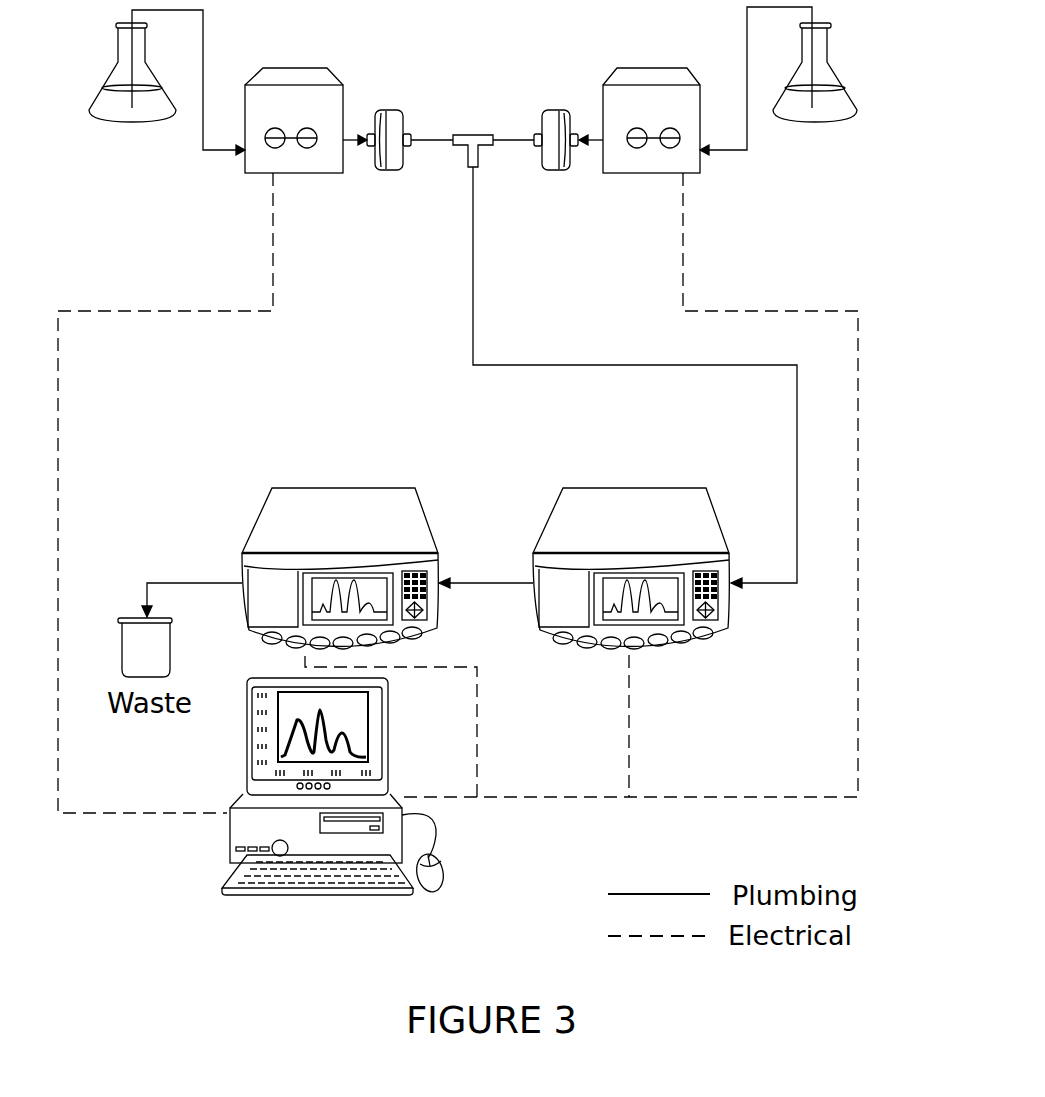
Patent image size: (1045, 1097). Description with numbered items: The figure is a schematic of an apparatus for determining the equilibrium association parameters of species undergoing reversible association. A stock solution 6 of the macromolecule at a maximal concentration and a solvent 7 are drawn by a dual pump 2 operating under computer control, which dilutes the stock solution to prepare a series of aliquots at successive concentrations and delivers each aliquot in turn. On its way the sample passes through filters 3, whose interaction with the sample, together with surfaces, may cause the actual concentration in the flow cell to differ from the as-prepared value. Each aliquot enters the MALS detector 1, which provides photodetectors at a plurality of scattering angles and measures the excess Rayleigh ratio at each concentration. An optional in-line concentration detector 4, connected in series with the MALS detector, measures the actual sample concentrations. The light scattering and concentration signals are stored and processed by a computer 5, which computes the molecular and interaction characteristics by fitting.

The MALS detector 1 is at (728, 642).
The pump 2 is at (295, 63).
The filters 3 is at (372, 173).
The in-line concentration detector 4 is at (240, 525).
The computer 5 is at (227, 843).
The stock solution 6 is at (102, 72).
The solvent 7 is at (840, 60).